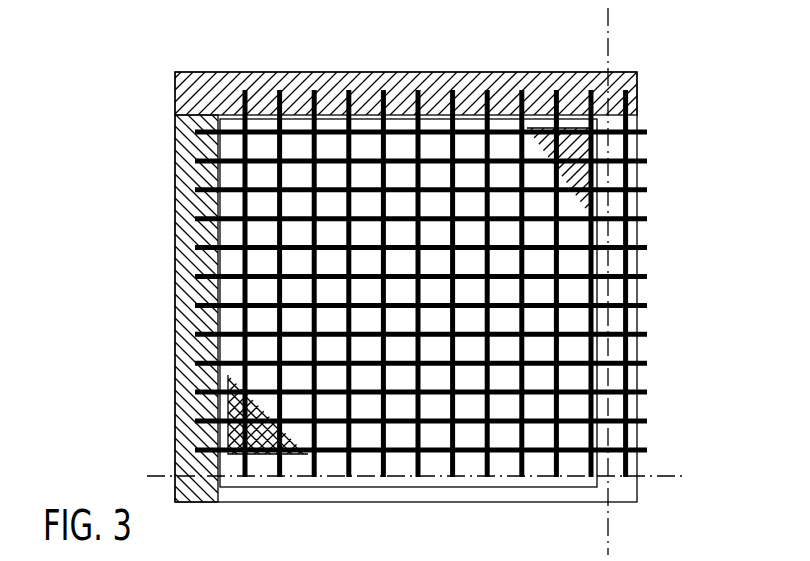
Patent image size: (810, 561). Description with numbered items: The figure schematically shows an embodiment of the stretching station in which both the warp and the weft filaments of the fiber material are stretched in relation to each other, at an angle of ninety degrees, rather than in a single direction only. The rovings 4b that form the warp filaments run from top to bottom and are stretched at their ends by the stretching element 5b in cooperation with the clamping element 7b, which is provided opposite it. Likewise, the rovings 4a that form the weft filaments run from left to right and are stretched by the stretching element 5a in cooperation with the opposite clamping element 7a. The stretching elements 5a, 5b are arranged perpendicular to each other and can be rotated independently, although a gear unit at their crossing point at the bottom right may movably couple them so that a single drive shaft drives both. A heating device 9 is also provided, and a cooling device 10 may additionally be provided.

The rovings forming the weft filaments 4a is at (583, 365).
The rovings forming the warp filaments 4b is at (558, 292).
The stretching element 5a is at (617, 326).
The stretching element 5b is at (495, 482).
The clamping element 7a is at (190, 258).
The clamping element 7b is at (440, 88).
The heating device 9 is at (585, 172).
The cooling device 10 is at (232, 413).